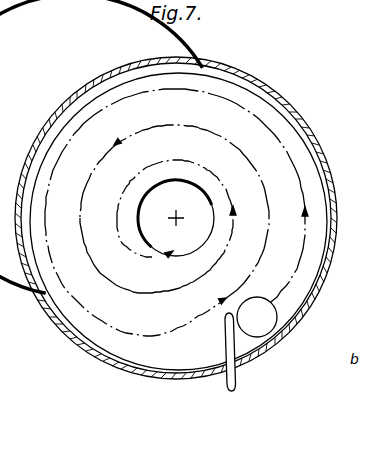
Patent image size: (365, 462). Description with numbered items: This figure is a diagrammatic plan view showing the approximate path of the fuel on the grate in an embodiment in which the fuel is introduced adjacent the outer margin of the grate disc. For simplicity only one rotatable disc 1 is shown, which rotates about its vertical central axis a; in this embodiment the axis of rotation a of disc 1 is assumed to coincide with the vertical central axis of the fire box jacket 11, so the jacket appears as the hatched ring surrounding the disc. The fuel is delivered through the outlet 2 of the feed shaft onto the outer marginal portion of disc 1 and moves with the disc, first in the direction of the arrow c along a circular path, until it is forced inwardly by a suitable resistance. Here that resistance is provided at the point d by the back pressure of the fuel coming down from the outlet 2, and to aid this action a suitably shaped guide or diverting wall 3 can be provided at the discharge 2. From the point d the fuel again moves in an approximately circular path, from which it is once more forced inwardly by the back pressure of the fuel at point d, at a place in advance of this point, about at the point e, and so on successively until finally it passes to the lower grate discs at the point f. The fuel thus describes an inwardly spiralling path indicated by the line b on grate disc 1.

The rotatable disc 1 is at (280, 113).
The outlet of the feed shaft 2 is at (268, 327).
The guide or diverting wall 3 is at (223, 340).
The fire box jacket 11 is at (63, 332).
The axis of rotation a is at (178, 216).
The path of the fuel b is at (93, 118).
The direction of fuel movement c is at (289, 277).
The point of inward diversion d is at (164, 332).
The point of subsequent inward diversion e is at (135, 292).
The point of passage to lower grate discs f is at (215, 213).